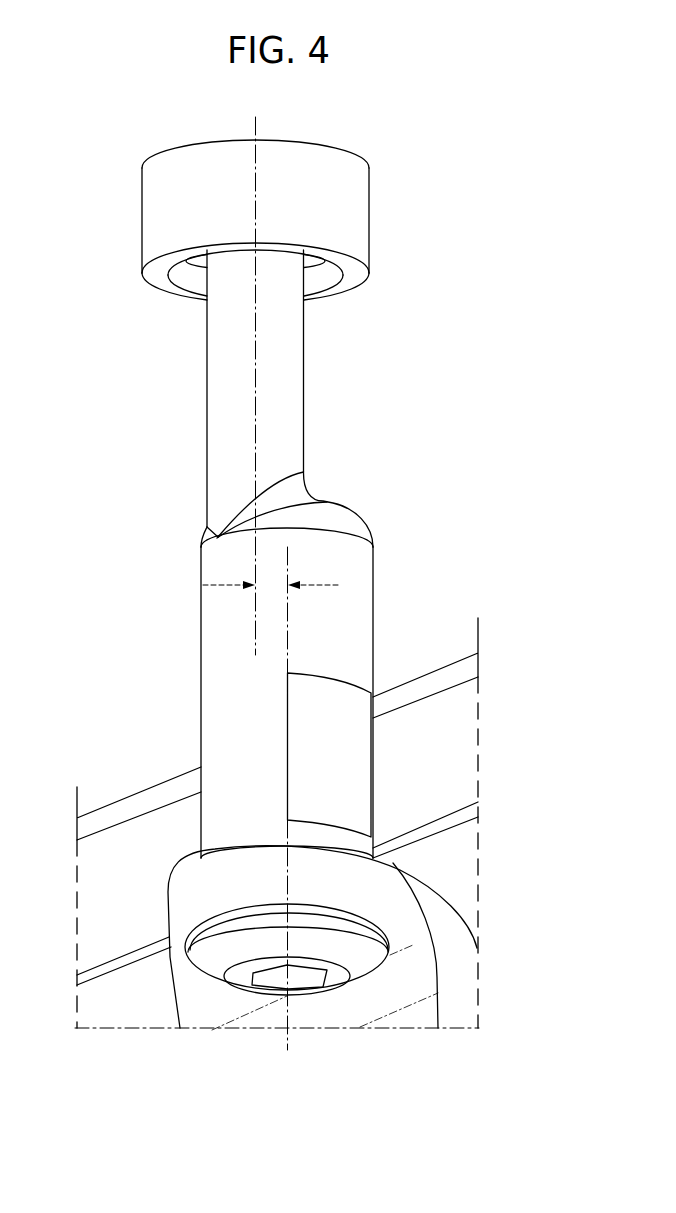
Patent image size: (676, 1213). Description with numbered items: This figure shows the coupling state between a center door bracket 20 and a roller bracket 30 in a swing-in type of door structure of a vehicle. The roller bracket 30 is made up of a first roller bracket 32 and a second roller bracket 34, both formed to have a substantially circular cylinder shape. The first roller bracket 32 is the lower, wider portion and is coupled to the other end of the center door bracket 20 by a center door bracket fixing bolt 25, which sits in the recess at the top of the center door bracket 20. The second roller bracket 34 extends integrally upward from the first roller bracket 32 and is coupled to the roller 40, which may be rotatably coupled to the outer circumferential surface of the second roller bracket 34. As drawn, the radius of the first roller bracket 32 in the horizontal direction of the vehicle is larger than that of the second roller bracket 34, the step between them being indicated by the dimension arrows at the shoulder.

The center door bracket 20 is at (455, 958).
The center door bracket fixing bolt 25 is at (358, 955).
The roller bracket 30 is at (361, 554).
The first roller bracket 32 is at (362, 613).
The second roller bracket 34 is at (304, 380).
The roller 40 is at (360, 215).